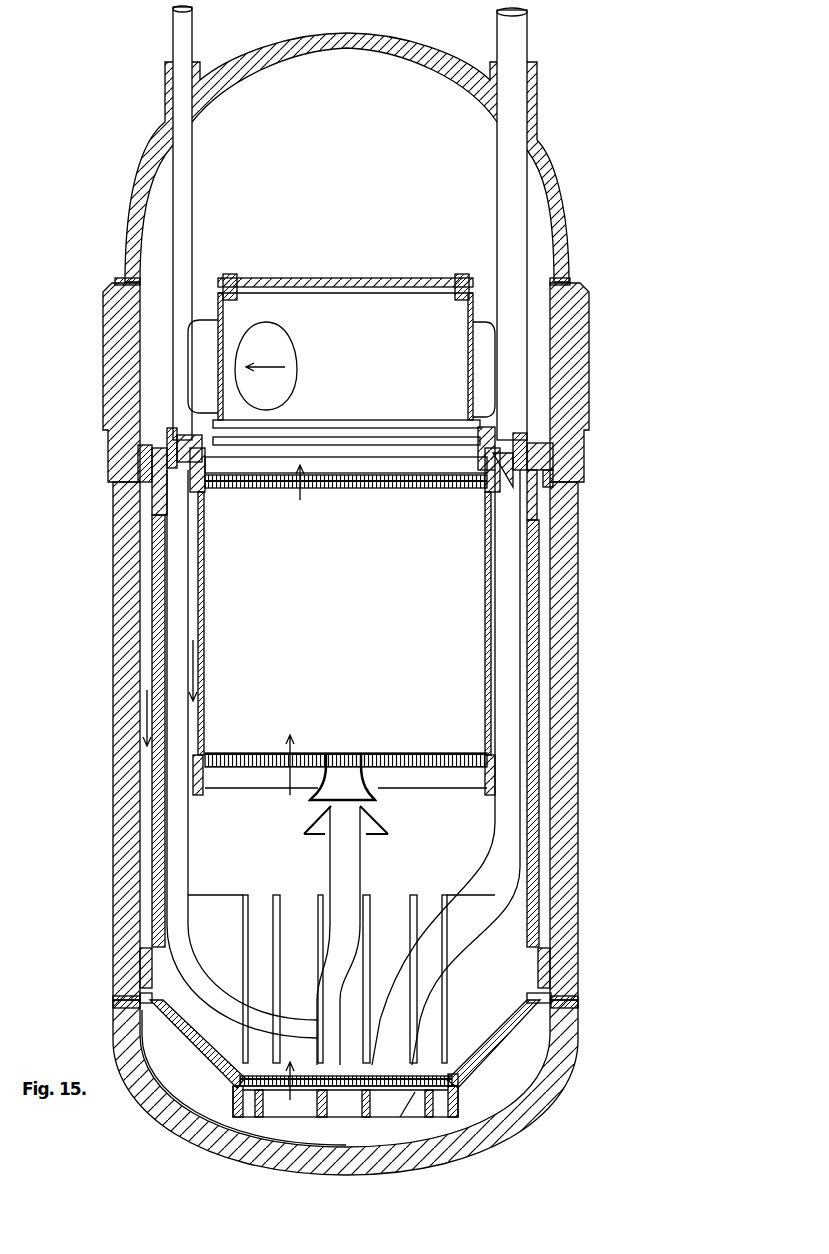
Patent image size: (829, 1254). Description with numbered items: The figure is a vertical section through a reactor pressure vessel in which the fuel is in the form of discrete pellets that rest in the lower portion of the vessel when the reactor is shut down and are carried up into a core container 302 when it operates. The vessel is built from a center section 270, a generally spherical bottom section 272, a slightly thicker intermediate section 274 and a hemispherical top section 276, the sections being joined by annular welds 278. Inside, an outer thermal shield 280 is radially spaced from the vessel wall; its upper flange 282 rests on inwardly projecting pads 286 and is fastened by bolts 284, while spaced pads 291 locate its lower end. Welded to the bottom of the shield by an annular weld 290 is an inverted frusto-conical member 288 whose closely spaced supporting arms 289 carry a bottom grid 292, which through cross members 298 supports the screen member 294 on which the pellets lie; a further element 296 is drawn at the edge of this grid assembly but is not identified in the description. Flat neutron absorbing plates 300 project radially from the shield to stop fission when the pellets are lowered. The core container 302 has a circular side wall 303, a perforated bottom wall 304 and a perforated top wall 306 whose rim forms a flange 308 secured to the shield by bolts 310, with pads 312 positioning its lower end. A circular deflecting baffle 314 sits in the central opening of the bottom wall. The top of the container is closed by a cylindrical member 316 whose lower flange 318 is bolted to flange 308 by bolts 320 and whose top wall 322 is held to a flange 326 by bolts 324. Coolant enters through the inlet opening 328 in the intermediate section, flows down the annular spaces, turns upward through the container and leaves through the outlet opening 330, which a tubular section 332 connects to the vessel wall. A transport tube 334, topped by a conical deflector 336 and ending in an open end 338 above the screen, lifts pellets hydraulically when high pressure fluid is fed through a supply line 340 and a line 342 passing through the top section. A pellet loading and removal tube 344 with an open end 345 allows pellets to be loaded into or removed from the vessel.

The center section 270 is at (572, 730).
The bottom section 272 is at (572, 1080).
The intermediate section 274 is at (580, 385).
The top section 276 is at (559, 222).
The annular weld 278 is at (566, 284).
The outer thermal shield 280 is at (548, 634).
The flange 282 is at (556, 478).
The bolts 284 is at (547, 444).
The inwardly projecting pads 286 is at (542, 510).
The inverted frusto-conical shaped member 288 is at (205, 1047).
The supporting arms 289 is at (503, 1030).
The annular weld 290 is at (528, 998).
The spaced pads 291 is at (545, 963).
The supporting grid 292 is at (472, 1112).
The screen member 294 is at (453, 1087).
The bracket 296 is at (463, 1078).
The cross members 298 is at (403, 1091).
The neutron absorbing plates 300 is at (507, 897).
The core container 302 is at (243, 571).
The circular side wall 303 is at (224, 644).
The perforated bottom wall 304 is at (246, 750).
The perforated top wall 306 is at (323, 487).
The outwardly projecting flange 308 is at (205, 467).
The bolts 310 is at (155, 430).
The spaced pads 312 is at (190, 797).
The circular deflecting baffle 314 is at (374, 793).
The cylindrical member 316 is at (222, 335).
The outwardly projecting flange 318 is at (243, 434).
The bolts 320 is at (214, 428).
The top wall 322 is at (322, 282).
The bolts 324 is at (232, 292).
The flange 326 is at (232, 293).
The coolant inlet opening 328 is at (478, 335).
The coolant outlet opening 330 is at (287, 351).
The tubular section 332 is at (205, 318).
The transport tube 334 is at (358, 857).
The conical deflector 336 is at (376, 826).
The open end 338 is at (330, 1092).
The supply line 340 is at (263, 1022).
The line 342 is at (185, 214).
The pellet loading and removal tube 344 is at (485, 878).
The open end 345 is at (390, 1068).